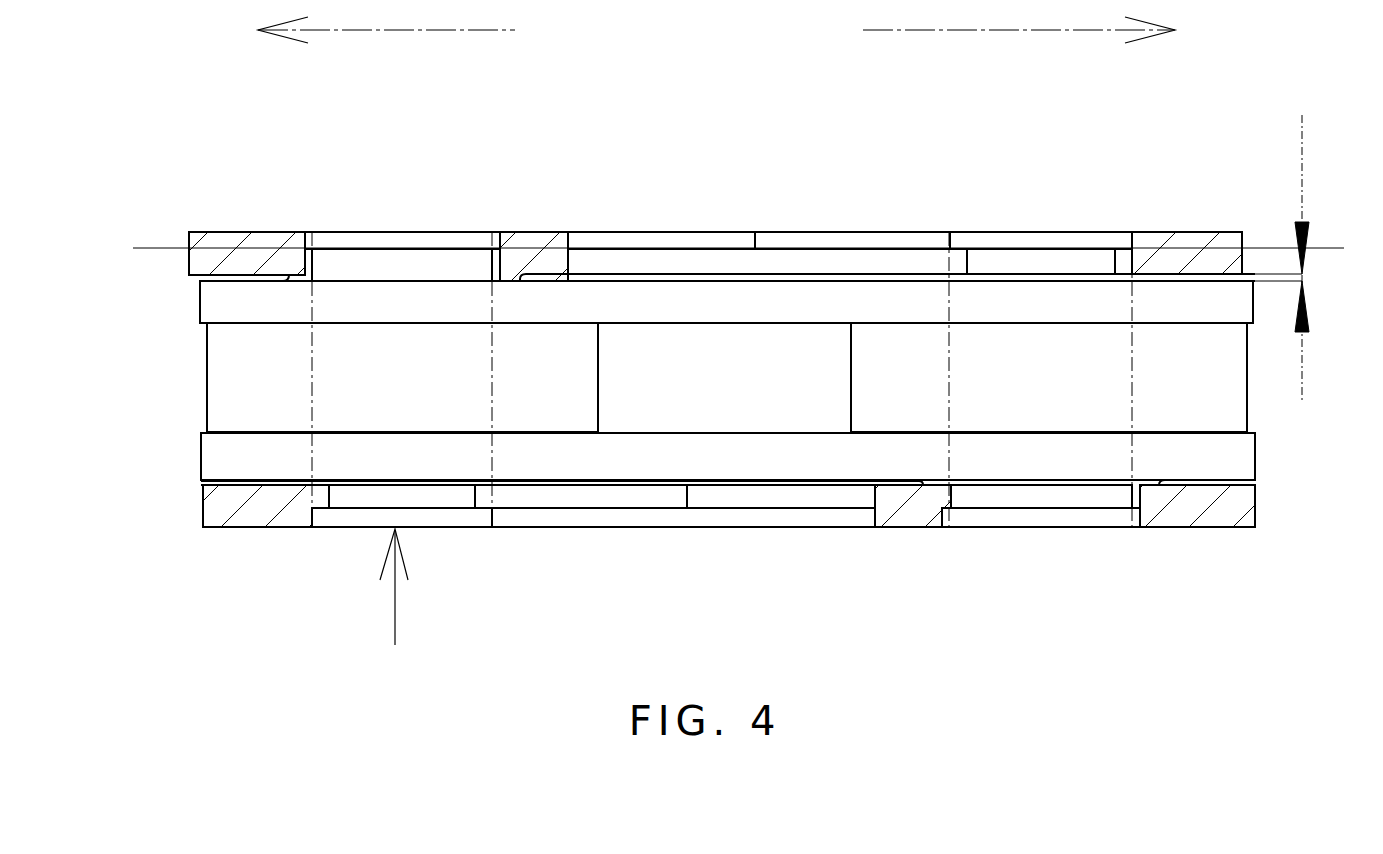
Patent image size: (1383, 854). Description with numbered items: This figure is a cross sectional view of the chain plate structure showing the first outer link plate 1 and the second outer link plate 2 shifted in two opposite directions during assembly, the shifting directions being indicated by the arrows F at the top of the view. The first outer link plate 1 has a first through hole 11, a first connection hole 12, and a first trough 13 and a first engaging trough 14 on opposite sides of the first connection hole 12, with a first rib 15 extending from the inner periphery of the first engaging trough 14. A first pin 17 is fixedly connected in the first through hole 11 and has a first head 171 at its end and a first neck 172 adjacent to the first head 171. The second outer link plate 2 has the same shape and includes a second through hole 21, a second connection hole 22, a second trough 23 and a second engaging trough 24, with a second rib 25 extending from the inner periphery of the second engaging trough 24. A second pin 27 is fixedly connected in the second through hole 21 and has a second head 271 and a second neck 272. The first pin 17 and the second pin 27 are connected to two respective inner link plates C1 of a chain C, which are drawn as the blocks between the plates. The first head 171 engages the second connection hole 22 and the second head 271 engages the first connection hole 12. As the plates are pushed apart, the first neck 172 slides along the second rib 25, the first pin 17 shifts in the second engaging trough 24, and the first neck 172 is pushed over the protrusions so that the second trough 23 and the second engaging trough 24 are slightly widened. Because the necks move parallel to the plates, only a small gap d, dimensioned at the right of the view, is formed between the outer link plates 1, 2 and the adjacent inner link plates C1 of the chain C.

The first outer link plate 1 is at (722, 325).
The first through hole 11 is at (298, 232).
The first connection hole 12 is at (713, 245).
The first trough 13 is at (568, 258).
The first engaging trough 14 is at (1103, 263).
The first rib 15 is at (805, 248).
The first pin 17 is at (407, 297).
The first head 171 is at (450, 518).
The first neck 172 is at (358, 496).
The second outer link plate 2 is at (692, 561).
The second through hole 21 is at (1143, 514).
The second connection hole 22 is at (708, 513).
The second trough 23 is at (873, 507).
The second engaging trough 24 is at (328, 497).
The second rib 25 is at (568, 510).
The second pin 27 is at (1063, 468).
The second head 271 is at (1050, 238).
The second neck 272 is at (1008, 253).
The chain C is at (237, 376).
The inner link plate C1 is at (746, 368).
The force direction F is at (133, 248).
The gap d is at (1294, 257).